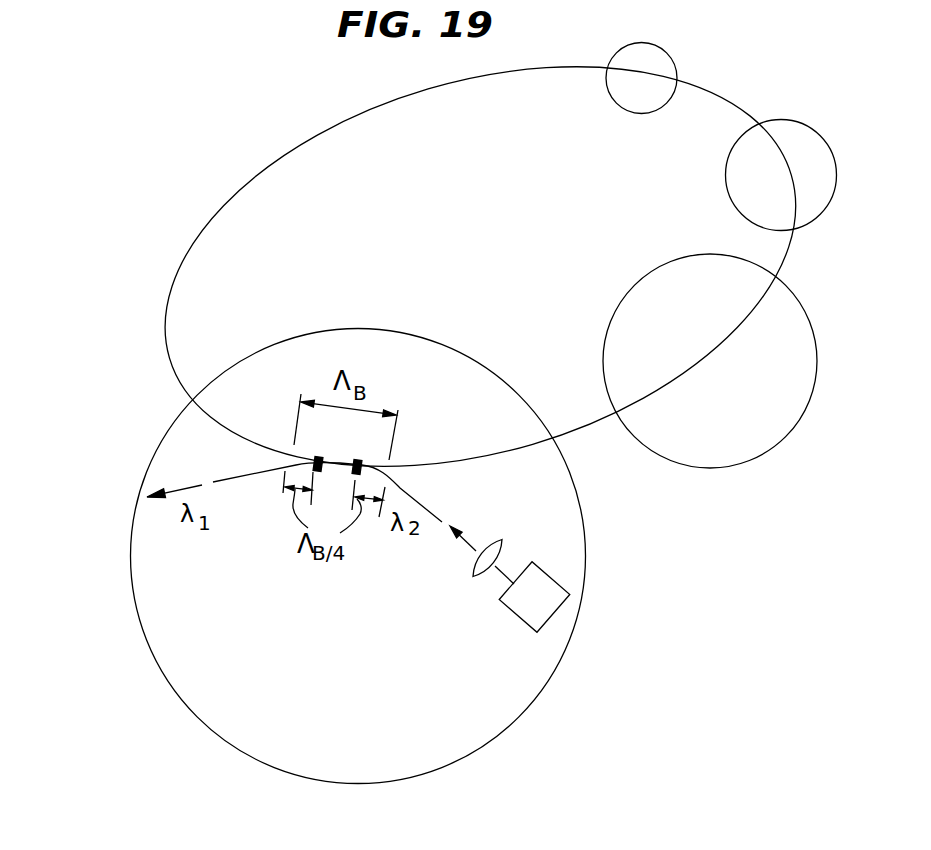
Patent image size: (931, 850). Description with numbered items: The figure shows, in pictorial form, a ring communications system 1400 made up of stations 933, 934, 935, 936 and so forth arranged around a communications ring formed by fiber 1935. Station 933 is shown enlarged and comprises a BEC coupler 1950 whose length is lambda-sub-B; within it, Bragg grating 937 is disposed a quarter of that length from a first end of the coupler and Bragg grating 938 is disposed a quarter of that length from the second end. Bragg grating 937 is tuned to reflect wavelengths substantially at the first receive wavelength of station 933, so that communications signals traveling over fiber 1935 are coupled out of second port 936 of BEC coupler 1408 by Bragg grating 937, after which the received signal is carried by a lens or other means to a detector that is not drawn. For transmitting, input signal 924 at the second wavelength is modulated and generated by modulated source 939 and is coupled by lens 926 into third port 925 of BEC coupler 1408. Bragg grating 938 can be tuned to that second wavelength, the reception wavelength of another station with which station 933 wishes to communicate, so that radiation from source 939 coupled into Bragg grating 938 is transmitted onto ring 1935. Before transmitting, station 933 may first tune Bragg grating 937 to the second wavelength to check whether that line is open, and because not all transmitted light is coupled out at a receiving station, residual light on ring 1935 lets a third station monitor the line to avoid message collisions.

The ring communications system 1400 is at (199, 134).
The fiber 1935 is at (164, 306).
The BEC coupler 1950 is at (297, 360).
The station 933 is at (424, 333).
The station 934 is at (629, 294).
The station 935 is at (726, 182).
The station / second port of BEC coupler 936 is at (627, 112).
The BEC coupler 1408 is at (313, 461).
The Bragg grating 938 is at (358, 461).
The Bragg grating 937 is at (284, 471).
The third port 925 is at (413, 495).
The input signal 924 is at (475, 549).
The lens 926 is at (473, 574).
The modulated source 939 is at (545, 568).